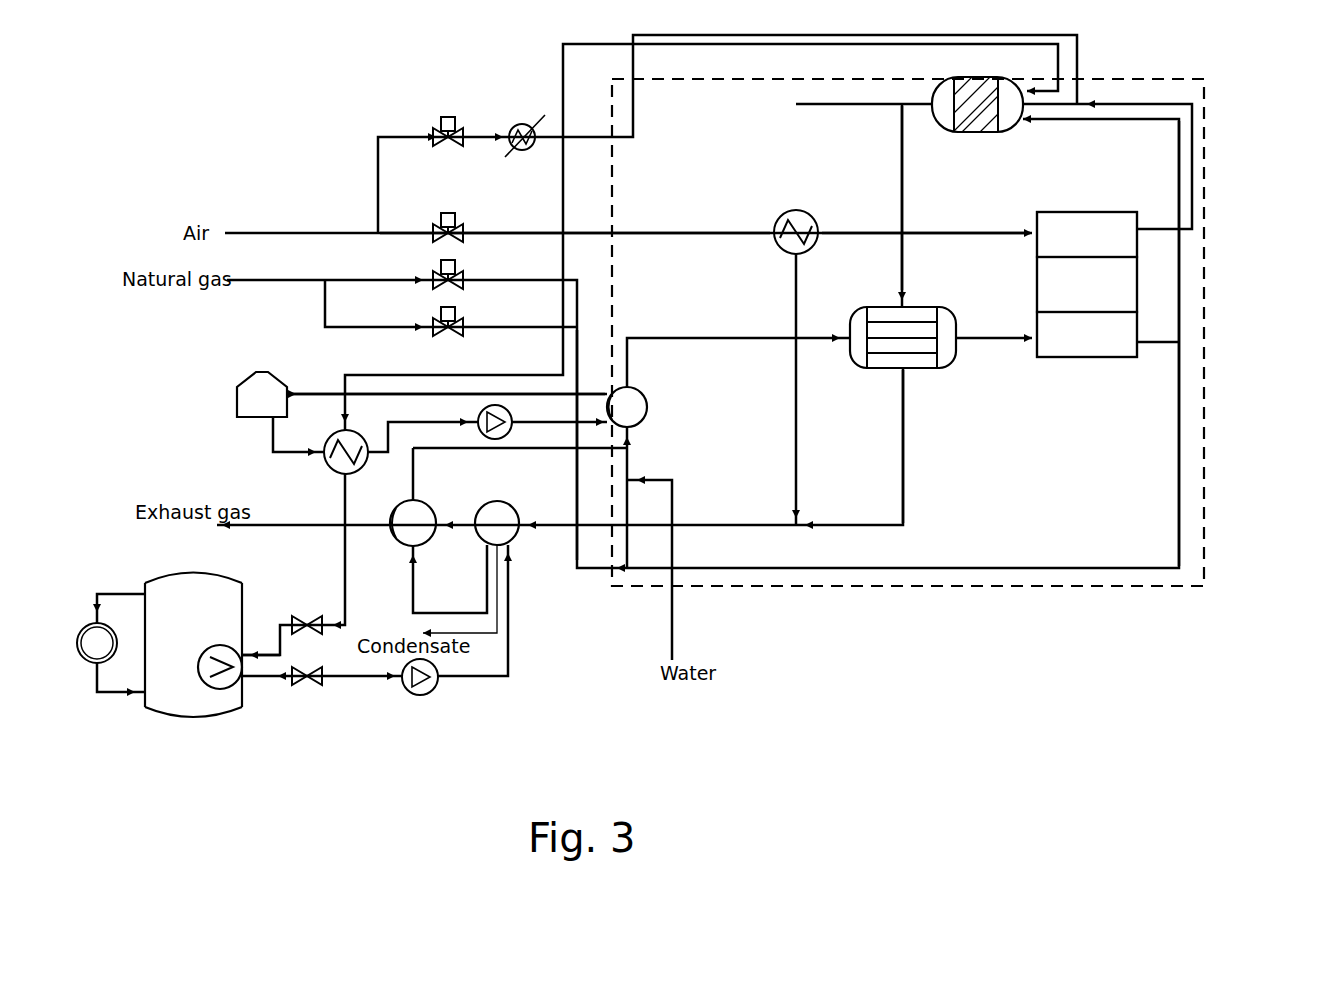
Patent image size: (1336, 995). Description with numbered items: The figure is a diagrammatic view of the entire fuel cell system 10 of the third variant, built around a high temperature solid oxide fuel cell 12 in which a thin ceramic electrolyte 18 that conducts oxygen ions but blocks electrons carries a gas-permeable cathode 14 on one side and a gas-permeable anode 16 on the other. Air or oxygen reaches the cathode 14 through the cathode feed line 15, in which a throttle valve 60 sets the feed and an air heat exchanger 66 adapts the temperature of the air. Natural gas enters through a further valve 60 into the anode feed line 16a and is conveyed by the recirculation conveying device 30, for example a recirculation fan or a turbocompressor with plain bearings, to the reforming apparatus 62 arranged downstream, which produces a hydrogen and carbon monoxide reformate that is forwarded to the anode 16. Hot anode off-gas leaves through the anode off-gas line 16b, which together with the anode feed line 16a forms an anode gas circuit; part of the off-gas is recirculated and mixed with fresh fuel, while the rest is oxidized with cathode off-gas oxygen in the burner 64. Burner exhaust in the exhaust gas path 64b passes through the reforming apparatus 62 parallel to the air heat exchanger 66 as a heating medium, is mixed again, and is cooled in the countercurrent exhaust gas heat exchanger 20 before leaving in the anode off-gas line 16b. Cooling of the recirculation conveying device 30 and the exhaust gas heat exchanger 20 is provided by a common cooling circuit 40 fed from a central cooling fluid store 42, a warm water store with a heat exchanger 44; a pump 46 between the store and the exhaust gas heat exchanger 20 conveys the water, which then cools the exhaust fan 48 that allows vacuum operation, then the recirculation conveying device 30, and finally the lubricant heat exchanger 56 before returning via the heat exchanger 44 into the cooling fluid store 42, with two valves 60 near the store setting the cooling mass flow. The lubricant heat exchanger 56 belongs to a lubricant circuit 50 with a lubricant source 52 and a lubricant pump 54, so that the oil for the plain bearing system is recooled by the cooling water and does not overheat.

The fuel cell system 10 is at (978, 672).
The high temperature fuel cell 12 is at (1068, 358).
The cathode 14 is at (1138, 240).
The anode 16 is at (1138, 333).
The electrolyte 18 is at (1138, 285).
The cathode feed line 15 is at (533, 232).
The anode feed line 16a is at (558, 305).
The anode off-gas line 16b is at (905, 490).
The exhaust gas heat exchanger 20 is at (518, 545).
The recirculation conveying device 30 is at (650, 395).
The cooling circuit 40 is at (512, 680).
The cooling fluid store 42 is at (205, 718).
The heat exchanger 44 is at (225, 690).
The pump 46 is at (433, 692).
The exhaust fan 48 is at (428, 547).
The lubricant circuit 50 is at (323, 393).
The lubricant source 52 is at (237, 395).
The lubricant pump 54 is at (500, 405).
The lubricant heat exchanger 56 is at (325, 463).
The valve 60 is at (446, 118).
The reforming apparatus 62 is at (930, 370).
The burner 64 is at (1000, 133).
The exhaust gas path 64b is at (905, 125).
The air heat exchanger 66 is at (790, 210).